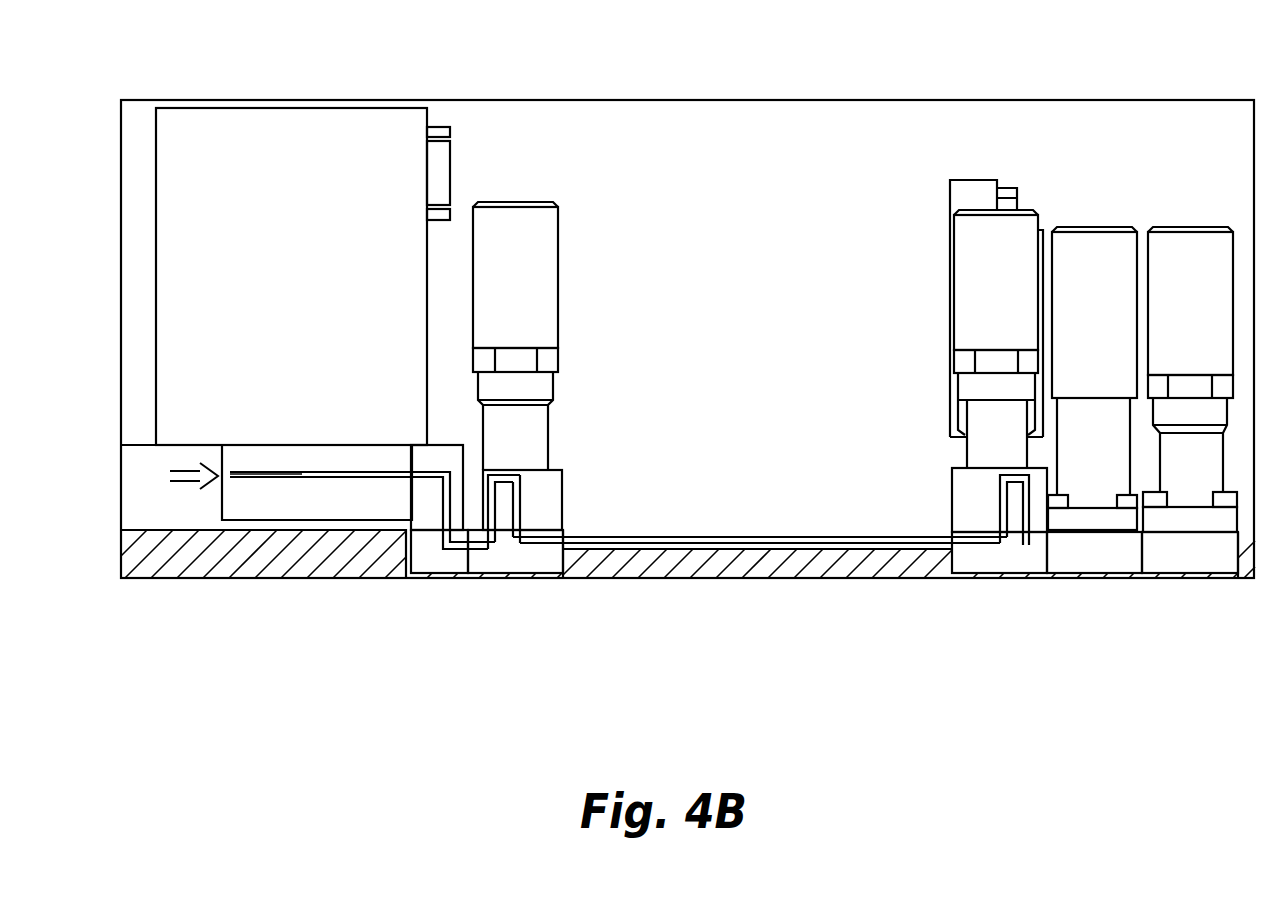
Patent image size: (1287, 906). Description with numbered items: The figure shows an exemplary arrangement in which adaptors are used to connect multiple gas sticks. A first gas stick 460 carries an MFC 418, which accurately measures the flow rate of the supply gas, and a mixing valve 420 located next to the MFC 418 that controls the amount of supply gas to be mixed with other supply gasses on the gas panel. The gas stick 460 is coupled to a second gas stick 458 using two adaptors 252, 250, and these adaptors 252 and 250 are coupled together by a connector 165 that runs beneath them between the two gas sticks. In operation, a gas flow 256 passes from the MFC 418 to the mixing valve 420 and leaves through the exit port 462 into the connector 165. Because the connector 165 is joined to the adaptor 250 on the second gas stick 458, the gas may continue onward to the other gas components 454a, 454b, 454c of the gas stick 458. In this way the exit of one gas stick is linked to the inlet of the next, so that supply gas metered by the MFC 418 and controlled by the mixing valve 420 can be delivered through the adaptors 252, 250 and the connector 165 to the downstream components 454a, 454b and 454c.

The MFC 418 is at (309, 222).
The mixing valve 420 is at (540, 267).
The gas component 454a is at (1020, 276).
The gas component 454b is at (1130, 282).
The gas component 454c is at (1216, 291).
The gas stick 460 is at (578, 93).
The gas stick 458 is at (1250, 93).
The exit port 462 is at (563, 537).
The fluid channel 165 is at (742, 537).
The adaptor 250 is at (970, 535).
The adaptor 252 is at (543, 538).
The gas flow 256 is at (443, 517).